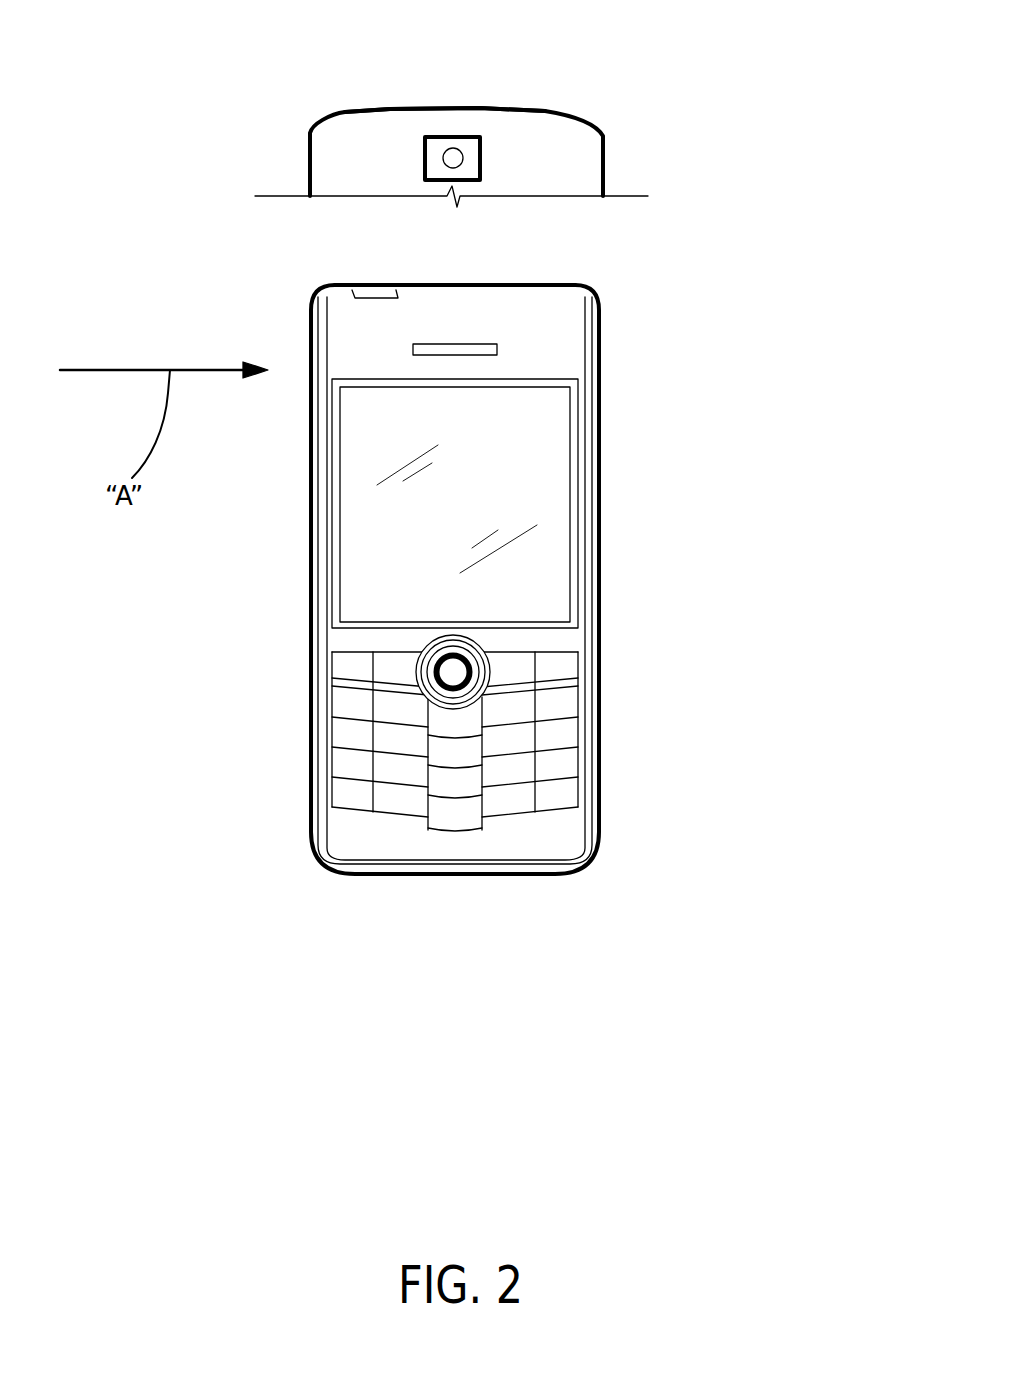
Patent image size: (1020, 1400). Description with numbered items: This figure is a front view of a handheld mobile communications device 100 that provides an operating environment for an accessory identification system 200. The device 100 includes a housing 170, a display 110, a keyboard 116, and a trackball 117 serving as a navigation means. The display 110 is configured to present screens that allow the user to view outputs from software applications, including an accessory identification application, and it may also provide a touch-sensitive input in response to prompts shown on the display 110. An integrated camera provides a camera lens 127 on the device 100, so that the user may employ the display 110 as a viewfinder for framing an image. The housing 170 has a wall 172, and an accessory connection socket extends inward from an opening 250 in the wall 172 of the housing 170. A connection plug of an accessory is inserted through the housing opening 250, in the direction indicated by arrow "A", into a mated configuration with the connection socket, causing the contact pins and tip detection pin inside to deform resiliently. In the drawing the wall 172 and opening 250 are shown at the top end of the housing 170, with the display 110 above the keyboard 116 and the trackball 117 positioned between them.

The mobile communications device 100 is at (520, 1052).
The display 110 is at (533, 475).
The keyboard 116 is at (458, 812).
The trackball 117 is at (453, 668).
The camera lens 127 is at (452, 135).
The housing 170 is at (368, 173).
The wall 172 is at (497, 107).
The accessory identification system 200 is at (297, 357).
The opening 250 is at (297, 382).